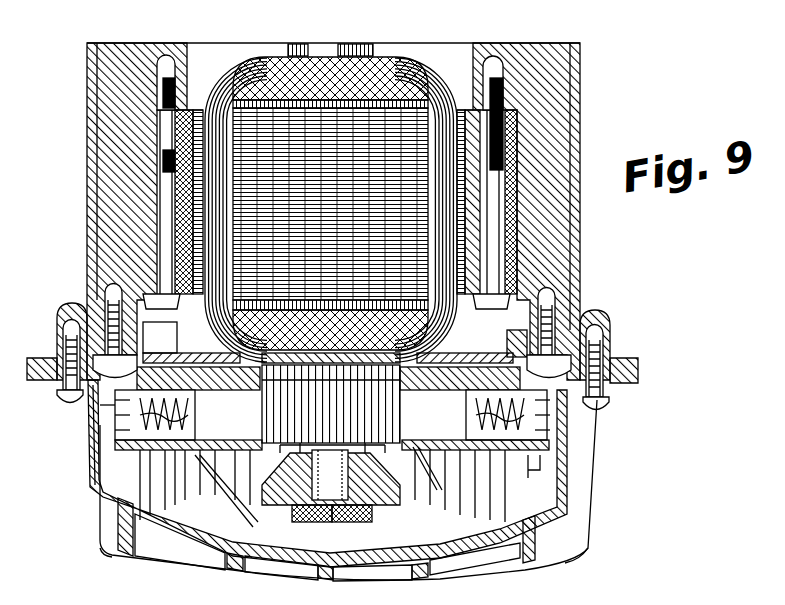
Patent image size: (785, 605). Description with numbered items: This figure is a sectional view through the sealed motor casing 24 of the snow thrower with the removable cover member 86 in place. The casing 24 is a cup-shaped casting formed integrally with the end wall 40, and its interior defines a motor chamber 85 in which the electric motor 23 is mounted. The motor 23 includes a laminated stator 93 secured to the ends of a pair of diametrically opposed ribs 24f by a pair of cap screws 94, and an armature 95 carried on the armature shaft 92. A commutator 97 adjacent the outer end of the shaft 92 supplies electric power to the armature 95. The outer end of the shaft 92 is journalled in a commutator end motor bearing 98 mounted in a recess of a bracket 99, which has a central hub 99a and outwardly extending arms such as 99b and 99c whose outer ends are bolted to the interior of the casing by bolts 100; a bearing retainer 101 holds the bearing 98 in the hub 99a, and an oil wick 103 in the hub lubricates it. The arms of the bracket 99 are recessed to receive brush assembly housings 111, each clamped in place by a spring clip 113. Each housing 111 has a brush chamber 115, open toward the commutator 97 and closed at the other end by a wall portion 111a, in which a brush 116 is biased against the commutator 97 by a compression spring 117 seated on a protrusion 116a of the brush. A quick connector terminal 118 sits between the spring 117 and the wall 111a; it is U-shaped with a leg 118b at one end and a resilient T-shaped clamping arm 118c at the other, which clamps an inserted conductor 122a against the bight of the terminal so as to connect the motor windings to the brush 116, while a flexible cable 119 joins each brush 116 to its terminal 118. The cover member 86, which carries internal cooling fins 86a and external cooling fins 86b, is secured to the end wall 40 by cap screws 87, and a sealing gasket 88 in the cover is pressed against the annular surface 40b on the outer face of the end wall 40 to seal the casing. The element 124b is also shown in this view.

The electric motor 23 is at (428, 68).
The sealed casing 24 is at (88, 150).
The ribs 24f is at (198, 48).
The end wall 40 is at (30, 368).
The annular surface 40b is at (638, 372).
The motor chamber 85 is at (218, 58).
The removable cover member 86 is at (95, 537).
The internal cooling fins 86a is at (118, 526).
The external cooling fins 86b is at (112, 556).
The cap screws 87 is at (60, 396).
The sealing gasket 88 is at (118, 408).
The armature shaft 92 is at (331, 474).
The laminated stator 93 is at (176, 188).
The cap screws 94 is at (162, 92).
The armature 95 is at (375, 65).
The commutator 97 is at (402, 400).
The commutator end motor bearing 98 is at (362, 522).
The bracket 99 is at (311, 563).
The central hub 99a is at (280, 570).
The arm 99b is at (426, 564).
The arm 99c is at (180, 542).
The bolts 100 is at (108, 300).
The bearing retainer 101 is at (262, 430).
The oil wick 103 is at (328, 522).
The brush assembly housing 111 is at (228, 448).
The wall portion 111a is at (130, 416).
The spring clips 113 is at (130, 500).
The brush chamber 115 is at (470, 362).
The brush 116 is at (228, 424).
The protrusion 116a is at (328, 350).
The compression spring 117 is at (185, 380).
The terminal 118 is at (492, 337).
The leg 118b is at (125, 400).
The T-shaped clamping arm 118c is at (140, 432).
The flexible cable 119 is at (190, 405).
The conductor 122a is at (167, 477).
The baffle 124b is at (547, 474).